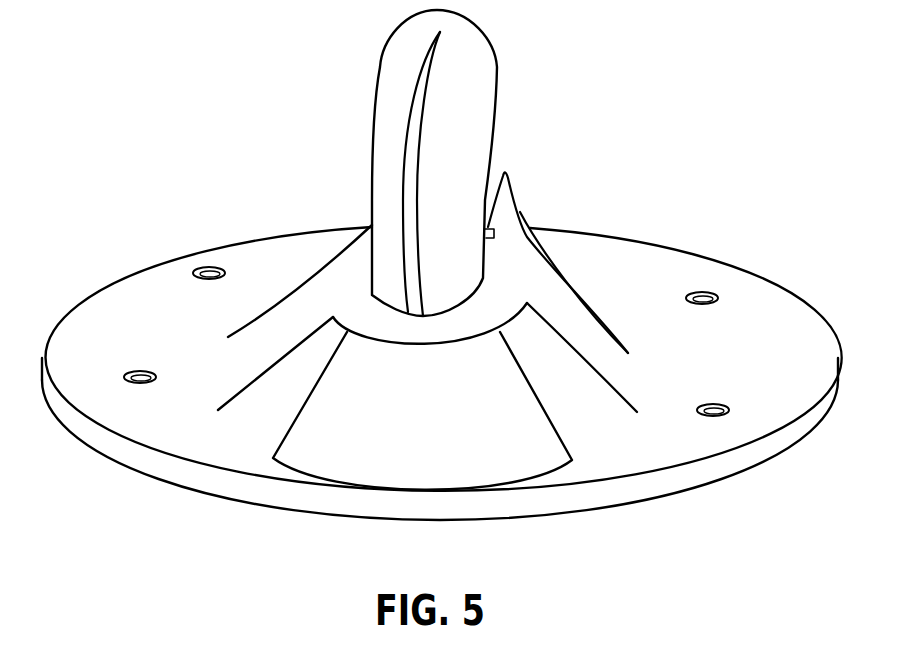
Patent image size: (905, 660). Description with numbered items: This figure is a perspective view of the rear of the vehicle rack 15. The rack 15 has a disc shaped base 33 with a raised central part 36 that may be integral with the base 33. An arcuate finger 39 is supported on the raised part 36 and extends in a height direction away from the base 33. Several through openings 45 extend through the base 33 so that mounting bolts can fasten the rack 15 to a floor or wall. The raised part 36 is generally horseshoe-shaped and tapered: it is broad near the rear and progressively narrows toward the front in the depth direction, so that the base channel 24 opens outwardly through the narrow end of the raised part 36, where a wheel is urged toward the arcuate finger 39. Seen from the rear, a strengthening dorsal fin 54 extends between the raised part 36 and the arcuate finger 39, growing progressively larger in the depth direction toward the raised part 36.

The rack 15 is at (430, 296).
The base channel 24 is at (505, 160).
The disc shaped base 33 is at (782, 328).
The raised central part 36 is at (493, 380).
The arcuate finger 39 is at (468, 110).
The through openings 45 is at (203, 268).
The strengthening dorsal fin 54 is at (410, 237).